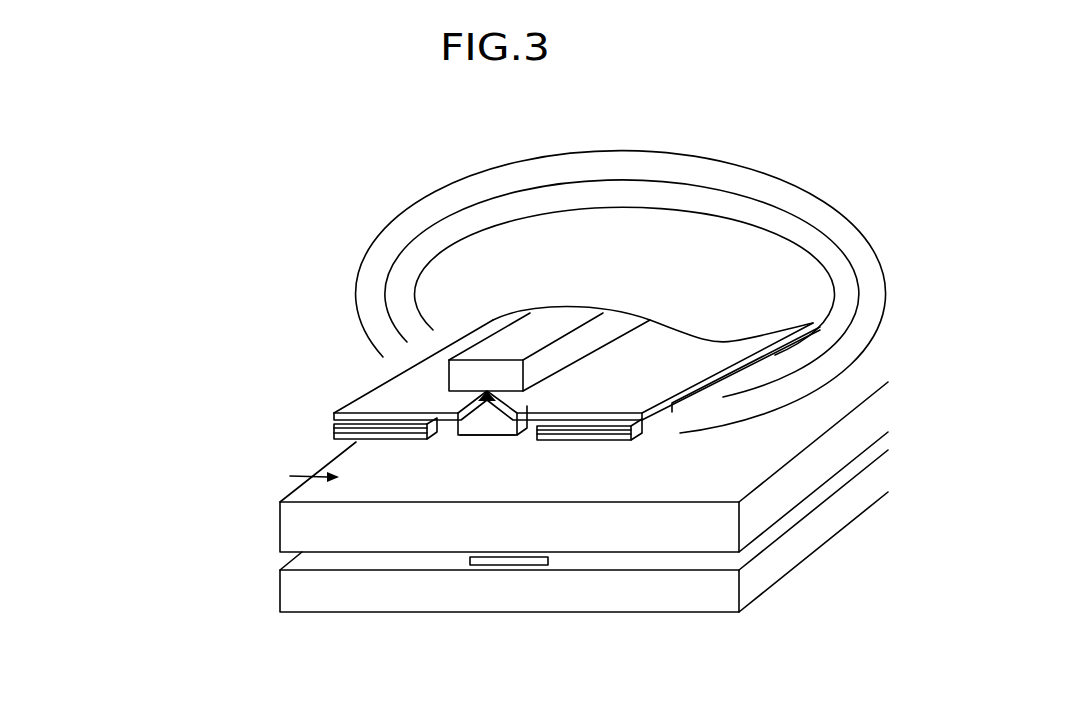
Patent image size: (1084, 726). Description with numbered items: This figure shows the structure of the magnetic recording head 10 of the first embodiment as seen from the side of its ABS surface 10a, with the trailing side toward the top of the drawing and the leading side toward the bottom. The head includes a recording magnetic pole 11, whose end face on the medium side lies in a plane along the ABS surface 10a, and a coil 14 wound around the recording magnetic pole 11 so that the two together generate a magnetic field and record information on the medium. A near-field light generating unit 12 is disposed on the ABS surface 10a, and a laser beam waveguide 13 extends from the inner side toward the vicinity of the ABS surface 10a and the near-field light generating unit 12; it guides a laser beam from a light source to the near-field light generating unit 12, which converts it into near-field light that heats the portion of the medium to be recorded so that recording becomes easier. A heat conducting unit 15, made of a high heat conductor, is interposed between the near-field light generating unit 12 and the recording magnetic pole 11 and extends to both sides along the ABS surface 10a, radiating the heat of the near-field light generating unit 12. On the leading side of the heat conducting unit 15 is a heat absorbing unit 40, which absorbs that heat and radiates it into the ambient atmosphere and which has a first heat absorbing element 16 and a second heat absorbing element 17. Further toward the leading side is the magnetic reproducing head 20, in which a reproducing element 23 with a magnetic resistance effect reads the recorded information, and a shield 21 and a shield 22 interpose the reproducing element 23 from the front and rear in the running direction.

The magnetic recording head 10 is at (346, 172).
The ABS surface 10a is at (477, 423).
The recording magnetic pole 11 is at (488, 432).
The near-field light generating unit 12 is at (478, 393).
The laser beam waveguide 13 is at (553, 322).
The coil 14 is at (760, 158).
The heat conducting unit 15 is at (672, 352).
The first heat absorbing element 16 is at (380, 438).
The second heat absorbing element 17 is at (584, 438).
The magnetic reproducing head 20 is at (498, 522).
The shield 21 is at (290, 525).
The shield 22 is at (290, 590).
The reproducing element 23 is at (510, 566).
The heat absorbing unit 40 is at (290, 476).